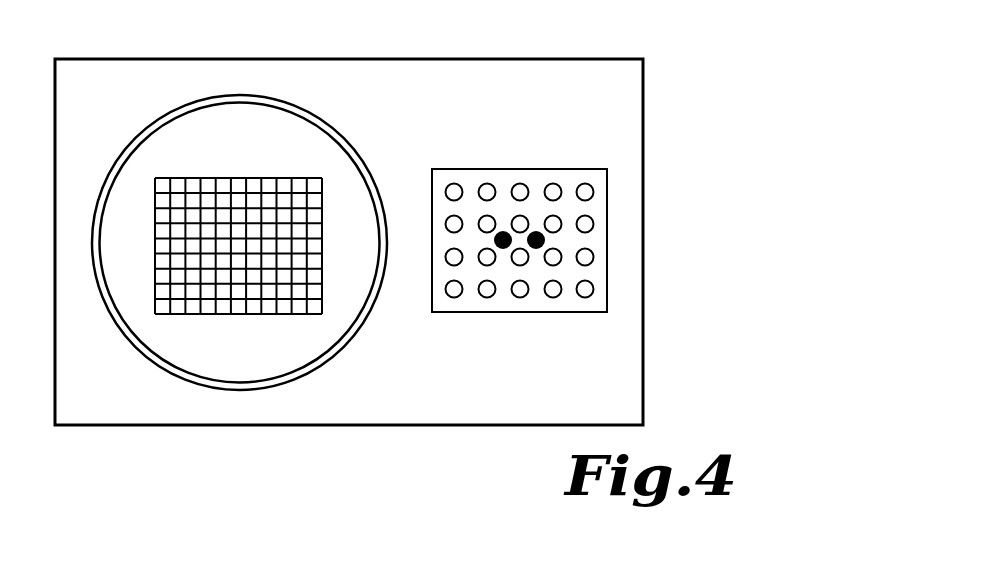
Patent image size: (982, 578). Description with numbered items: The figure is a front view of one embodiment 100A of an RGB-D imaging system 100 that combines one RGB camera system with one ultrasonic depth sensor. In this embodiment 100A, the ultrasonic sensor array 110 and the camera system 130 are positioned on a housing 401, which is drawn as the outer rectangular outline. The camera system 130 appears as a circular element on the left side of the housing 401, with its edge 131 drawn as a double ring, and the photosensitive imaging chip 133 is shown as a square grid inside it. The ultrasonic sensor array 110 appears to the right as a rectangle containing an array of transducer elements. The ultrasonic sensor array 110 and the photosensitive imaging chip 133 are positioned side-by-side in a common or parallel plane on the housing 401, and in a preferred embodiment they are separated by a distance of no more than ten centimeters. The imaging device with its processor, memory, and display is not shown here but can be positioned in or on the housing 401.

The RGB-D imaging system 100 is at (715, 148).
The embodiment of RGB-D imaging system 100A is at (680, 103).
The ultrasonic sensor array 110 is at (500, 313).
The camera system 130 is at (262, 244).
The wafer edge 131 is at (144, 362).
The photosensitive imaging chip 133 is at (238, 315).
The housing 401 is at (337, 427).